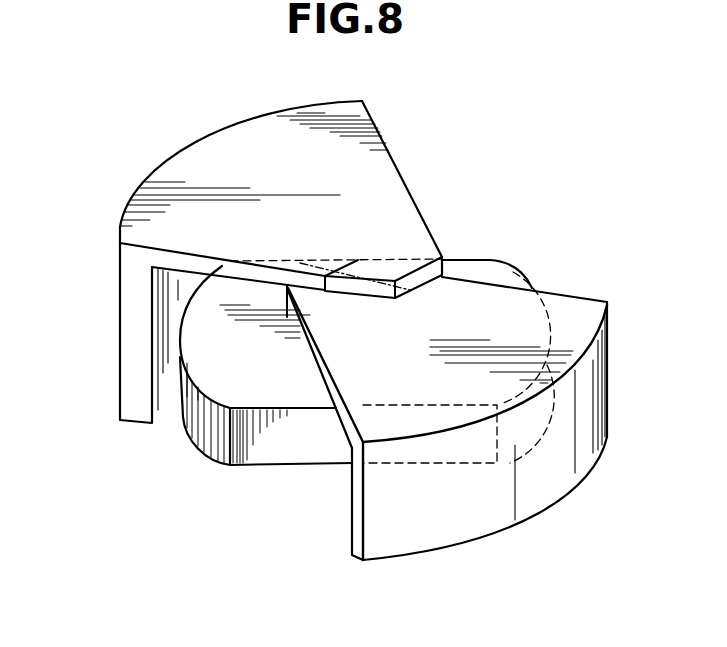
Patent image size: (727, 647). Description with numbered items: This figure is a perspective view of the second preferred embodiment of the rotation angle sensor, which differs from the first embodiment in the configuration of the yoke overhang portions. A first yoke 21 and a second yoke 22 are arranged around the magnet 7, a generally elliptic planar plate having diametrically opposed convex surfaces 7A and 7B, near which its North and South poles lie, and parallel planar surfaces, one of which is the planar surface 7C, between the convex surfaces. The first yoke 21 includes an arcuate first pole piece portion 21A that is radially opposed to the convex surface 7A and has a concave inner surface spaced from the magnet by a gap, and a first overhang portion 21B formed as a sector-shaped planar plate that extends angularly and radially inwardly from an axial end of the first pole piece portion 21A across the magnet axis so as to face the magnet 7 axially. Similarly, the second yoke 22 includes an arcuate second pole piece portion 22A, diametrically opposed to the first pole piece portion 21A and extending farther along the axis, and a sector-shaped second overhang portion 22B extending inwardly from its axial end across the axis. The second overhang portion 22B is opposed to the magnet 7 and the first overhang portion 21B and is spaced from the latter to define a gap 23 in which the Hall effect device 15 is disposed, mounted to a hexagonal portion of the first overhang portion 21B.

The second yoke 22 is at (252, 148).
The second pole piece portion 22A is at (130, 320).
The second overhang portion 22B is at (370, 165).
The magnet 7 is at (480, 267).
The convex surface 7A is at (517, 428).
The convex surface 7B is at (200, 417).
The planar surface 7C is at (330, 450).
The first yoke 21 is at (593, 385).
The first pole piece portion 21A is at (467, 523).
The first overhang portion 21B is at (513, 305).
The gap 23 is at (357, 302).
The Hall effect device 15 is at (340, 298).